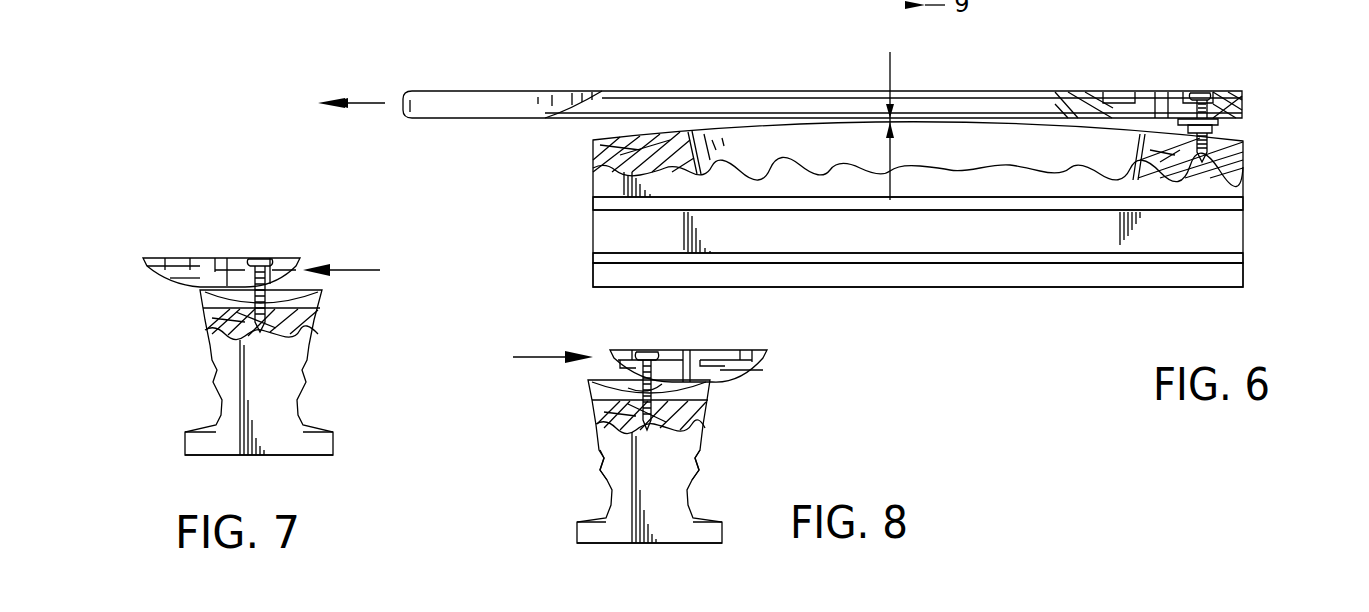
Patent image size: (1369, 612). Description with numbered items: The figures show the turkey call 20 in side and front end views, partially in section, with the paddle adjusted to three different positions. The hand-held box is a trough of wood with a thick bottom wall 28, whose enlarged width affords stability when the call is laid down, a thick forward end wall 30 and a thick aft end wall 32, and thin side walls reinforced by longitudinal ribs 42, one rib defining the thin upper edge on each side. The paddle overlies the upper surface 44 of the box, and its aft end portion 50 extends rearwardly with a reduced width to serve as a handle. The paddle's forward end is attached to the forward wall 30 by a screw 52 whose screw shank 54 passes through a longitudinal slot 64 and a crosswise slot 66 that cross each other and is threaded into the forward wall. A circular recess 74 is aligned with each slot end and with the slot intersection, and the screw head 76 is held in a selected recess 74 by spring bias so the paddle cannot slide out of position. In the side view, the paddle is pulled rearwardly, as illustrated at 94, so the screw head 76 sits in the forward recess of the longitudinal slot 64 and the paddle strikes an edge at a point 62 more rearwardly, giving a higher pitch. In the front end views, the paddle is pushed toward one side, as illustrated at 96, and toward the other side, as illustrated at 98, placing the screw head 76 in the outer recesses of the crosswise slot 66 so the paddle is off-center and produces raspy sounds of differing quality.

In FIG. 6, the turkey call 20 is at (1280, 54).
In FIG. 7, the turkey call 20 is at (356, 312).
In FIG. 8, the turkey call 20 is at (790, 380).
In FIG. 6, the bottom wall 28 is at (1243, 280).
In FIG. 7, the bottom wall 28 is at (330, 443).
In FIG. 8, the bottom wall 28 is at (722, 530).
In FIG. 6, the forward end wall 30 is at (1237, 164).
In FIG. 6, the aft end wall 32 is at (598, 150).
In FIG. 6, the longitudinal ribs 42 is at (1243, 200).
In FIG. 8, the longitudinal ribs 42 is at (600, 462).
In FIG. 6, the upper surface of the box 44 is at (1232, 136).
In FIG. 6, the aft end portion (handle) 50 is at (480, 91).
In FIG. 7, the screw 52 is at (258, 258).
In FIG. 7, the screw shank 54 is at (290, 258).
In FIG. 6, the contact point 62 is at (888, 62).
In FIG. 8, the longitudinal slot 64 is at (690, 350).
In FIG. 6, the crosswise slot 66 is at (1153, 92).
In FIG. 6, the circular recess 74 is at (1112, 92).
In FIG. 8, the circular recess 74 is at (632, 350).
In FIG. 6, the screw head 76 is at (1060, 91).
In FIG. 8, the screw head 76 is at (648, 350).
In FIG. 6, the rearward paddle movement 94 is at (352, 100).
In FIG. 7, the sideways paddle movement toward one side 96 is at (380, 268).
In FIG. 8, the sideways paddle movement toward the other side 98 is at (533, 353).